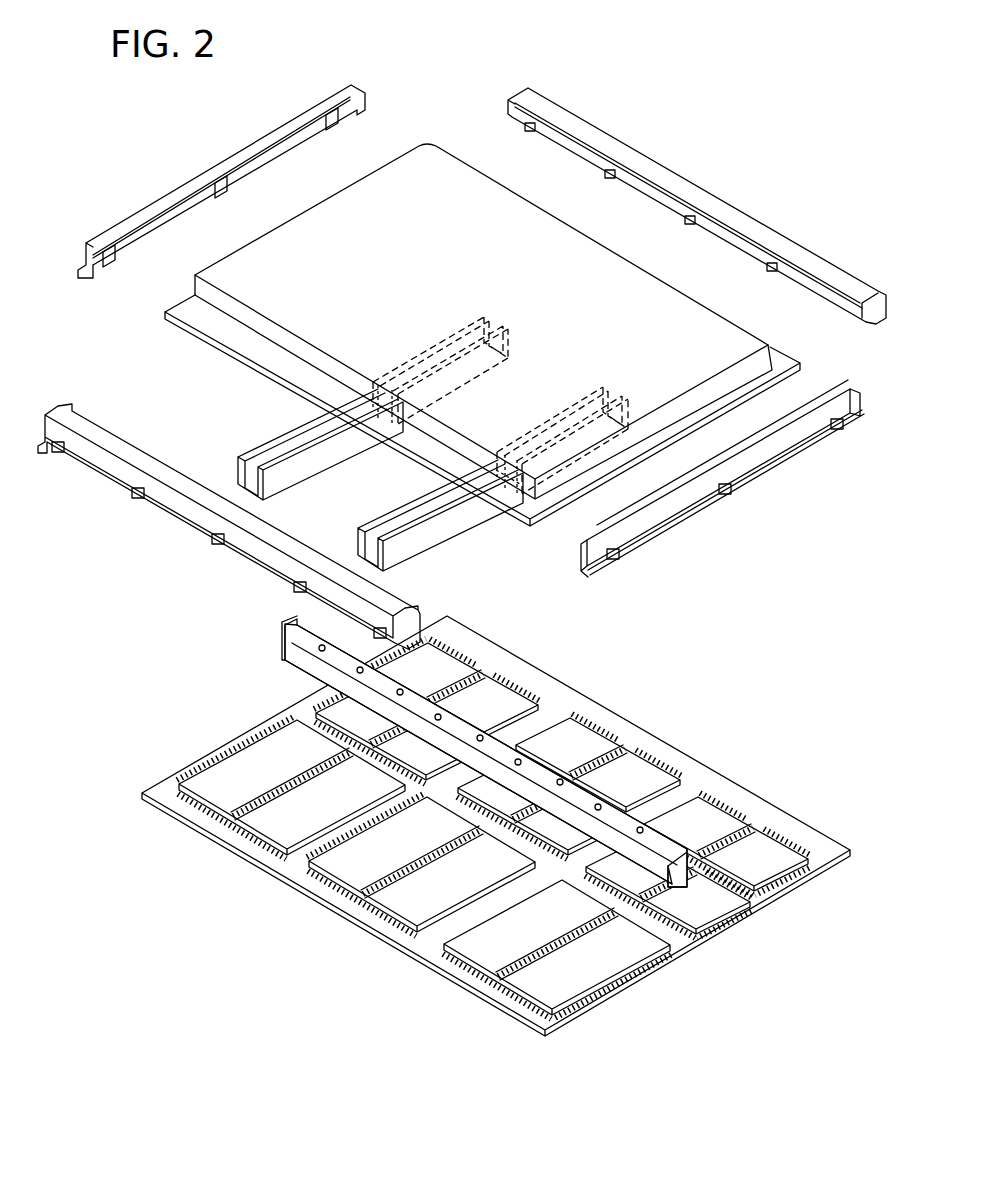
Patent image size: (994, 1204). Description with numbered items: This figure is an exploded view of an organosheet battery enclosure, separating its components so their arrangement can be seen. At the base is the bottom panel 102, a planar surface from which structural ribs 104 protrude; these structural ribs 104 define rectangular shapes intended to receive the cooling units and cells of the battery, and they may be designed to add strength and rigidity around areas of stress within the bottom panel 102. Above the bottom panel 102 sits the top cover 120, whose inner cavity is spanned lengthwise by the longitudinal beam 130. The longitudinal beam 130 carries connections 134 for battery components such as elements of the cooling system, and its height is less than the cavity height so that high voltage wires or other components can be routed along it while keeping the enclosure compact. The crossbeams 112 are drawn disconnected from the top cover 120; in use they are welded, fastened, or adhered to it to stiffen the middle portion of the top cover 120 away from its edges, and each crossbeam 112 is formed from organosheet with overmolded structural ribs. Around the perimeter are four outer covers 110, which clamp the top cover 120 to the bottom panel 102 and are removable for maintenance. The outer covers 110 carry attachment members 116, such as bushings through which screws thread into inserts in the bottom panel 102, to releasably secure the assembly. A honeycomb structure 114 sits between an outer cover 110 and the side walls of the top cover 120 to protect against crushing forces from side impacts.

The bottom panel 102 is at (793, 817).
The structural ribs 104 is at (247, 836).
The outer covers 110 is at (473, 367).
The crossbeams 112 is at (413, 350).
The honeycomb structure 114 is at (863, 304).
The attachment members 116 is at (67, 406).
The top cover 120 is at (428, 185).
The longitudinal beam 130 is at (437, 751).
The connections 134 is at (285, 650).